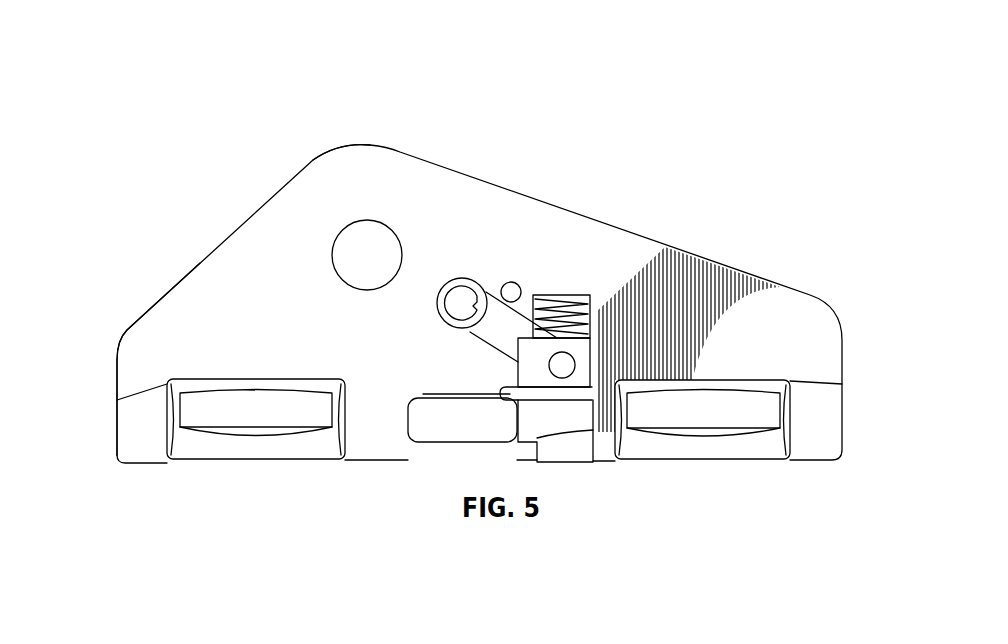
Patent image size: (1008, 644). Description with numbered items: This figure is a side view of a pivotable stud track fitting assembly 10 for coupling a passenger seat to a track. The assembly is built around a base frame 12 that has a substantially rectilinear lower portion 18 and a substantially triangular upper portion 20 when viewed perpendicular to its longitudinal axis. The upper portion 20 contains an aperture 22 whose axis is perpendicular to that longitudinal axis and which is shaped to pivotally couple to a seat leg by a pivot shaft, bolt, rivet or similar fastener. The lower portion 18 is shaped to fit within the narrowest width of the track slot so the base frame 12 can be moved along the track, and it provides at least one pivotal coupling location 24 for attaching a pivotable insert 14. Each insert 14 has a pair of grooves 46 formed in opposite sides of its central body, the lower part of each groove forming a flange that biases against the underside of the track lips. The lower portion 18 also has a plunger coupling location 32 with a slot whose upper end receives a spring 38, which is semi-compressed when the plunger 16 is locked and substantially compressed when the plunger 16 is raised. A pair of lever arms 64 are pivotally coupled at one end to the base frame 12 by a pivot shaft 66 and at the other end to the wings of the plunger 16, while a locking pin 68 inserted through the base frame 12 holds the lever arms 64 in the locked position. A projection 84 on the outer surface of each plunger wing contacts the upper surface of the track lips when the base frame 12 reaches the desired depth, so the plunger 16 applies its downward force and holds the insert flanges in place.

The pivotable stud track fitting assembly 10 is at (804, 134).
The base frame 12 is at (250, 232).
The pivotable insert 14 is at (208, 448).
The plunger 16 is at (557, 420).
The lower portion 18 is at (185, 330).
The upper portion 20 is at (313, 173).
The aperture 22 is at (370, 228).
The pivotal coupling location 24 is at (117, 400).
The plunger coupling location 32 is at (575, 295).
The spring 38 is at (557, 295).
The groove 46 is at (256, 410).
The lever arm 64 is at (497, 330).
The pivot shaft 66 is at (462, 300).
The locking pin 68 is at (518, 287).
The projection 84 is at (573, 392).